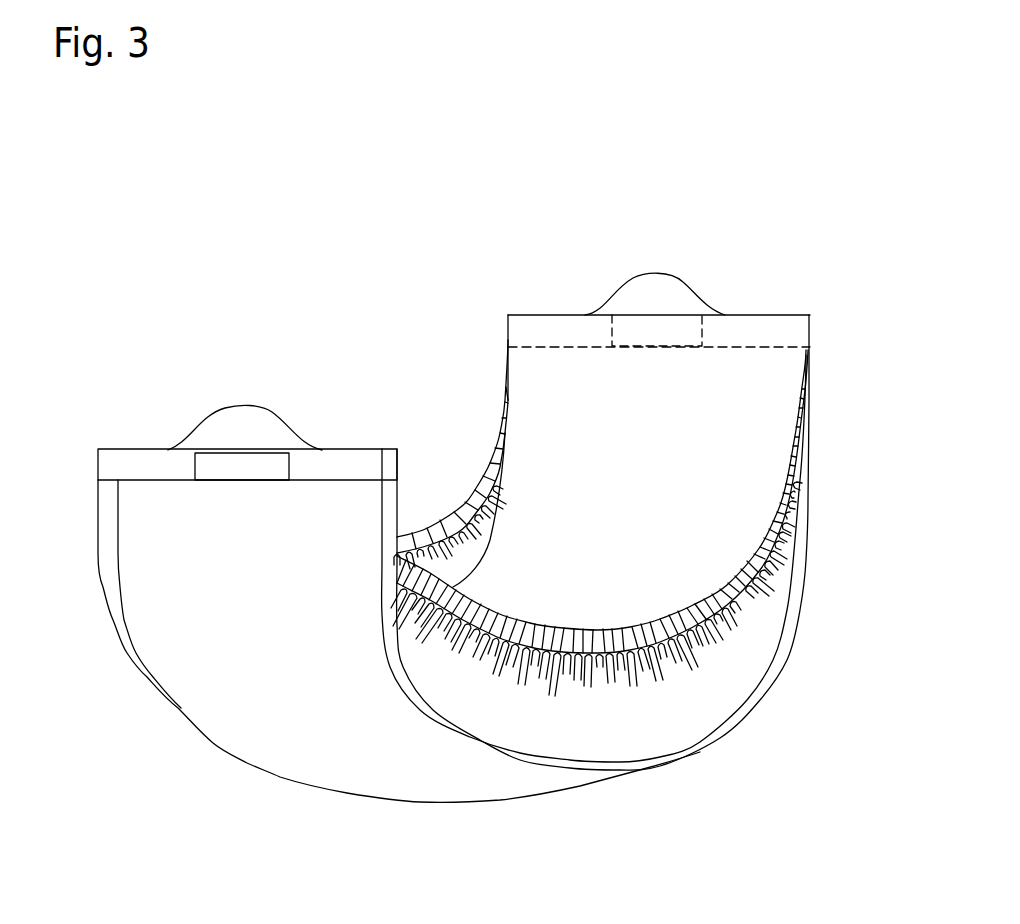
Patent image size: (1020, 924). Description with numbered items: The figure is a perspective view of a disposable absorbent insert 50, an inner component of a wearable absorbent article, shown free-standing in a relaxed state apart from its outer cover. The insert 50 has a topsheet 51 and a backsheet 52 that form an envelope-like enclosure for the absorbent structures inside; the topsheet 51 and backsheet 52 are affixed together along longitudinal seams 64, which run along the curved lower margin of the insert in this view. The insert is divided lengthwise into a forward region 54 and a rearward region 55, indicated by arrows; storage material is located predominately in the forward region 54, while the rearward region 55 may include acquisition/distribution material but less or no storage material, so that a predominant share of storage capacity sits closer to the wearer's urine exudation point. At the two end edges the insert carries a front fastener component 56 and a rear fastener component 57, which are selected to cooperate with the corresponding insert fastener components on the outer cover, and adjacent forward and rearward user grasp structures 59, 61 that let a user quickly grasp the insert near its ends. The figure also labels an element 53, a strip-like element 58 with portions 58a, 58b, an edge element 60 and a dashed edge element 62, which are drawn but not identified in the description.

The disposable absorbent insert 50 is at (398, 245).
The topsheet 51 is at (717, 420).
The backsheet 52 is at (242, 722).
The hook elements 53 is at (480, 477).
The forward region 54 is at (205, 630).
The rearward region 55 is at (570, 403).
The front fastener component 56 is at (215, 465).
The rear fastener component 57 is at (677, 328).
The fastening strip 58 is at (607, 496).
The strip upper edge 58a is at (763, 555).
The strip lower edge 58b is at (750, 595).
The forward user grasp structure 59 is at (247, 405).
The upper edge of second flap 60 is at (115, 460).
The rearward user grasp structure 61 is at (665, 273).
The upper edge of first flap 62 is at (768, 332).
The longitudinal seams 64 is at (472, 733).